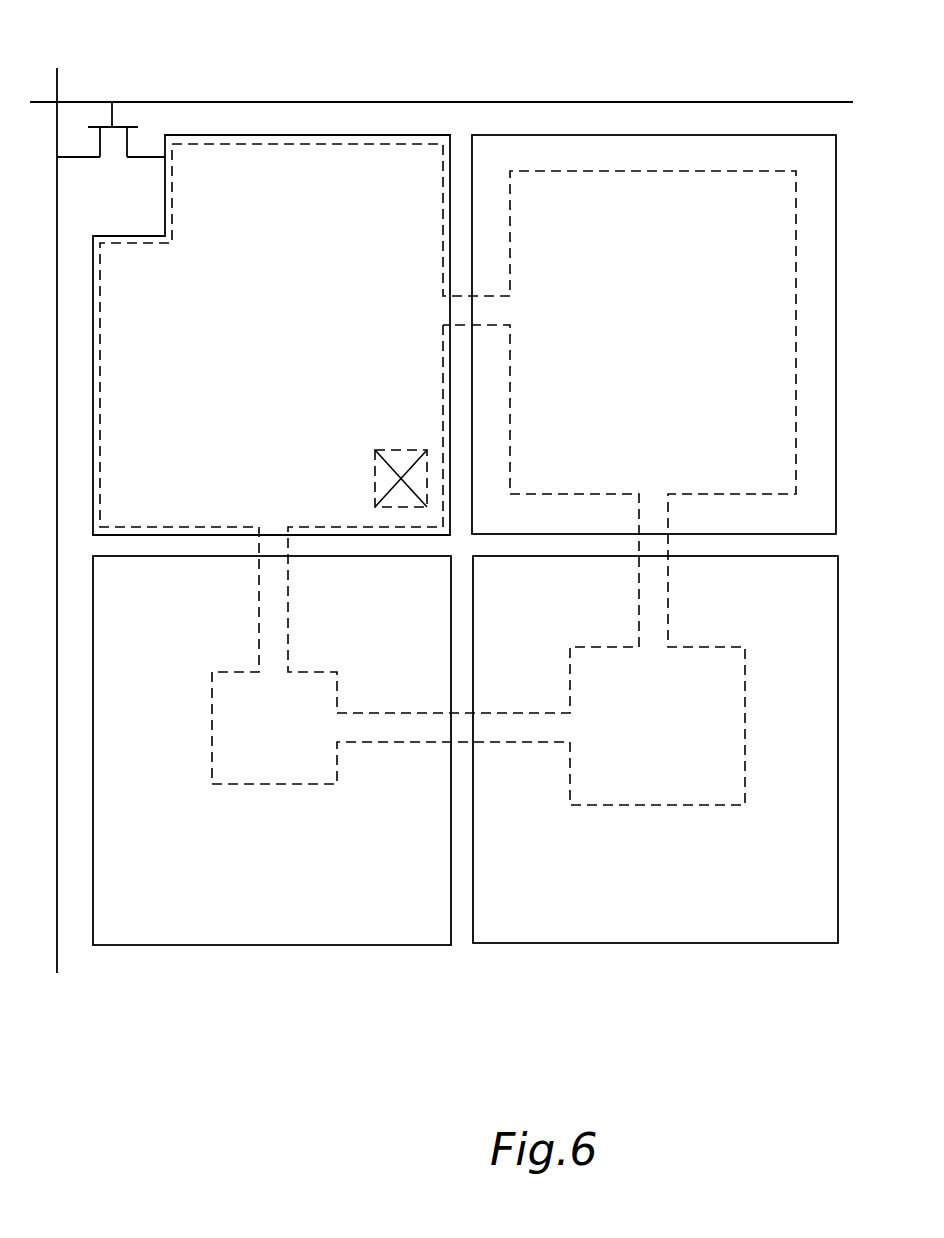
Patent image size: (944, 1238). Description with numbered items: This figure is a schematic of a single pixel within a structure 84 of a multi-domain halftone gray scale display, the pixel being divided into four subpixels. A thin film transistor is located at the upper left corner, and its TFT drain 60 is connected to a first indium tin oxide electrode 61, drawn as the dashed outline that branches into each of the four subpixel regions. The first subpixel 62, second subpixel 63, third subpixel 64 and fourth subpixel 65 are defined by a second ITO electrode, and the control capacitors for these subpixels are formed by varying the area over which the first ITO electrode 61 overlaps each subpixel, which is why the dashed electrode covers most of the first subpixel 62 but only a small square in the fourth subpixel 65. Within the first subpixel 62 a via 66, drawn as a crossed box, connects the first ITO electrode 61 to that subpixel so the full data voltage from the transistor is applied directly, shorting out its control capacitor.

The TFT drain 60 is at (127, 140).
The first indium tin oxide electrode 61 is at (412, 147).
The #1 subpixel 62 is at (310, 135).
The #2 subpixel 63 is at (543, 133).
The #3 subpixel 64 is at (660, 942).
The #4 subpixel 65 is at (260, 945).
The via 66 is at (375, 480).
The structure of a multi-domain halftone display 84 is at (441, 51).